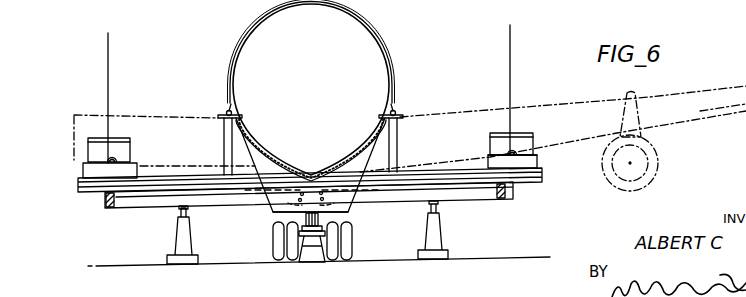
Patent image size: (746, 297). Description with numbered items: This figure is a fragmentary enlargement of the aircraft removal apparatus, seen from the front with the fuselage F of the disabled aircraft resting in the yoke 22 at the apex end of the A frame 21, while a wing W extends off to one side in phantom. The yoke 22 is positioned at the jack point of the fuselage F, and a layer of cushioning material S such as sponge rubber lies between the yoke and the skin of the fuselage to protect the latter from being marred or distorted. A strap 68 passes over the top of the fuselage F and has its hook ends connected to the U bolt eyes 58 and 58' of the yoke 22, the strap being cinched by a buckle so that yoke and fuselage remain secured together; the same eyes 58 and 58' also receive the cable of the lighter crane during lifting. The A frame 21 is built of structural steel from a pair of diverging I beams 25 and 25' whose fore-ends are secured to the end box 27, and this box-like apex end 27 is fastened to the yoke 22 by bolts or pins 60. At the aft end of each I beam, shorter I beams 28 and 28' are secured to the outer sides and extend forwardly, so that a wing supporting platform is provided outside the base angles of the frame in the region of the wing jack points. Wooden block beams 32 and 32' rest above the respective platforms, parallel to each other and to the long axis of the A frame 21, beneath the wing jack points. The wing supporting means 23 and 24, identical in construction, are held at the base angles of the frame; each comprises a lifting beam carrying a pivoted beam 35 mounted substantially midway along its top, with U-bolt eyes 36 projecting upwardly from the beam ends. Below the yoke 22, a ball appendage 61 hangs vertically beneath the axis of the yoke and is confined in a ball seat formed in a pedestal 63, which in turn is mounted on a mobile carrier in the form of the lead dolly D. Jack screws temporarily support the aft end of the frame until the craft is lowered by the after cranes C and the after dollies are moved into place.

The A frame 21 is at (219, 214).
The yoke 22 is at (275, 214).
The wing supporting means 23 is at (142, 165).
The wing supporting means 24 is at (484, 157).
The I beam 25 is at (240, 176).
The I beam 25' is at (404, 175).
The end box 27 is at (302, 190).
The shorter I beam 28 is at (98, 219).
The shorter I beam 28' is at (523, 208).
The block beam 32 is at (130, 172).
The block beam 32' is at (491, 165).
The pivoted beam 35 is at (125, 148).
The U-bolt eye 36 is at (117, 160).
The U bolt eye 58 is at (215, 105).
The U bolt eye 58' is at (404, 100).
The bolts or pins 60 is at (326, 191).
The ball appendage 61 is at (98, 0).
The pedestal 63 is at (329, 216).
The strap 68 is at (232, 76).
The after cranes C is at (107, 48).
The dolly D is at (276, 264).
The fuselage F is at (340, 37).
The cushioning material S is at (283, 163).
The wing W is at (745, 64).